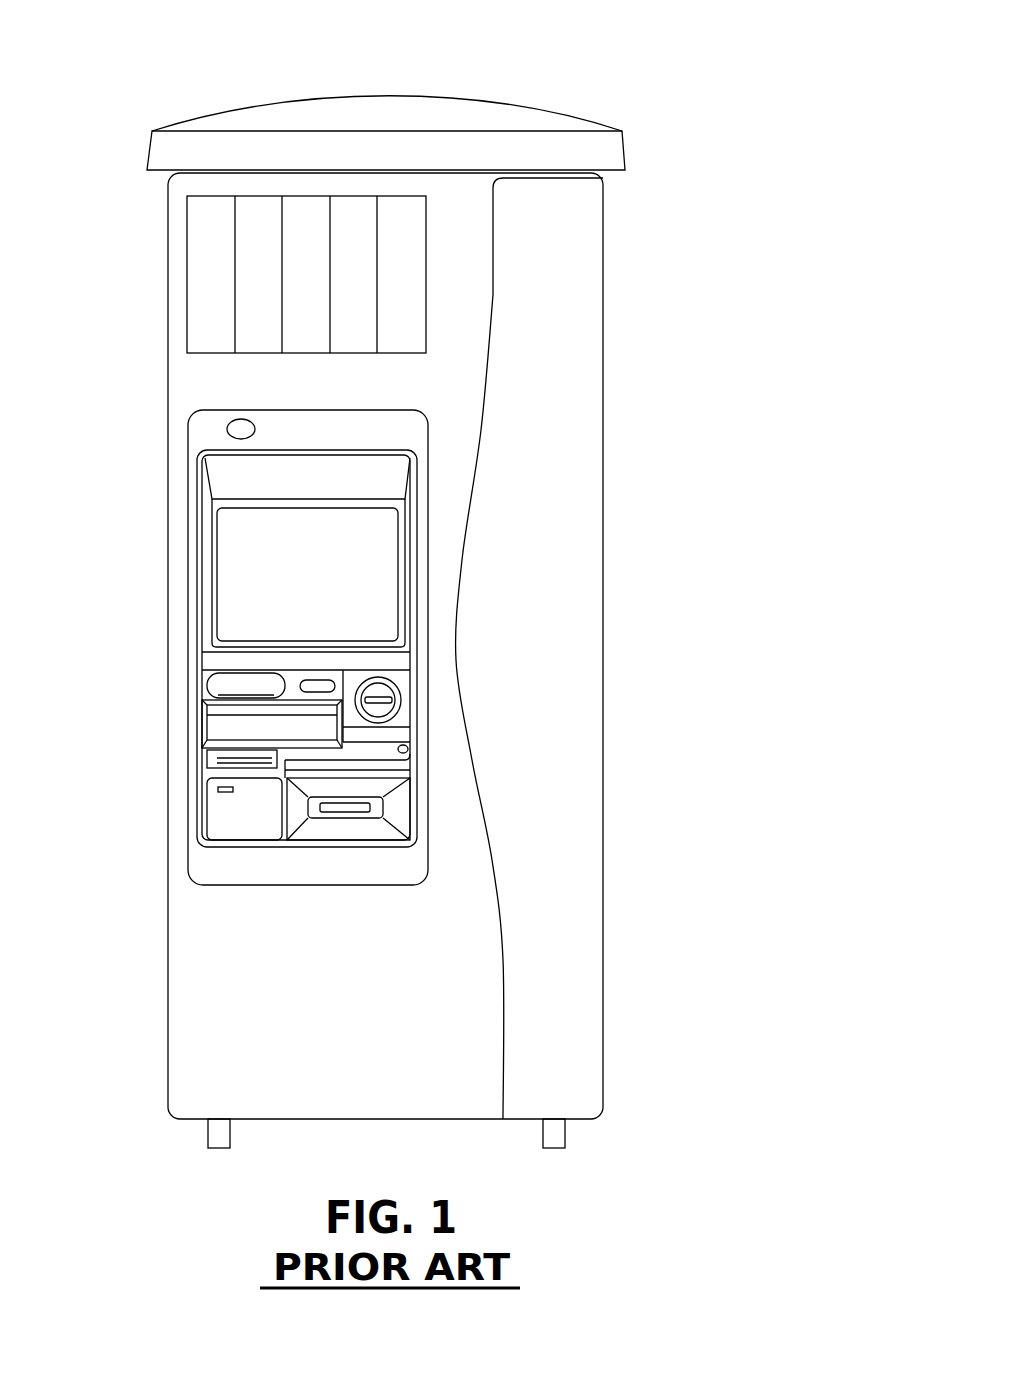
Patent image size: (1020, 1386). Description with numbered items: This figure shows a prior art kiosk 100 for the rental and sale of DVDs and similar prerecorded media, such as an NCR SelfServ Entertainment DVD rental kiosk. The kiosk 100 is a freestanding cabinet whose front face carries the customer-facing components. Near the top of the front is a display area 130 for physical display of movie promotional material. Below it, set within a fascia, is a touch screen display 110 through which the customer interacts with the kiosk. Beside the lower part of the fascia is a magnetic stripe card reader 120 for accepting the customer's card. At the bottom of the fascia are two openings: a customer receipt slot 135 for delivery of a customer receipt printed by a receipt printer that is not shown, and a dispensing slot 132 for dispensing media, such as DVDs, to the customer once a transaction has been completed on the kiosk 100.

The kiosk 100 is at (650, 78).
The display area 130 is at (207, 285).
The touch screen display 110 is at (233, 558).
The magnetic stripe card reader 120 is at (392, 692).
The customer receipt slot 135 is at (218, 790).
The dispensing slot 132 is at (347, 812).